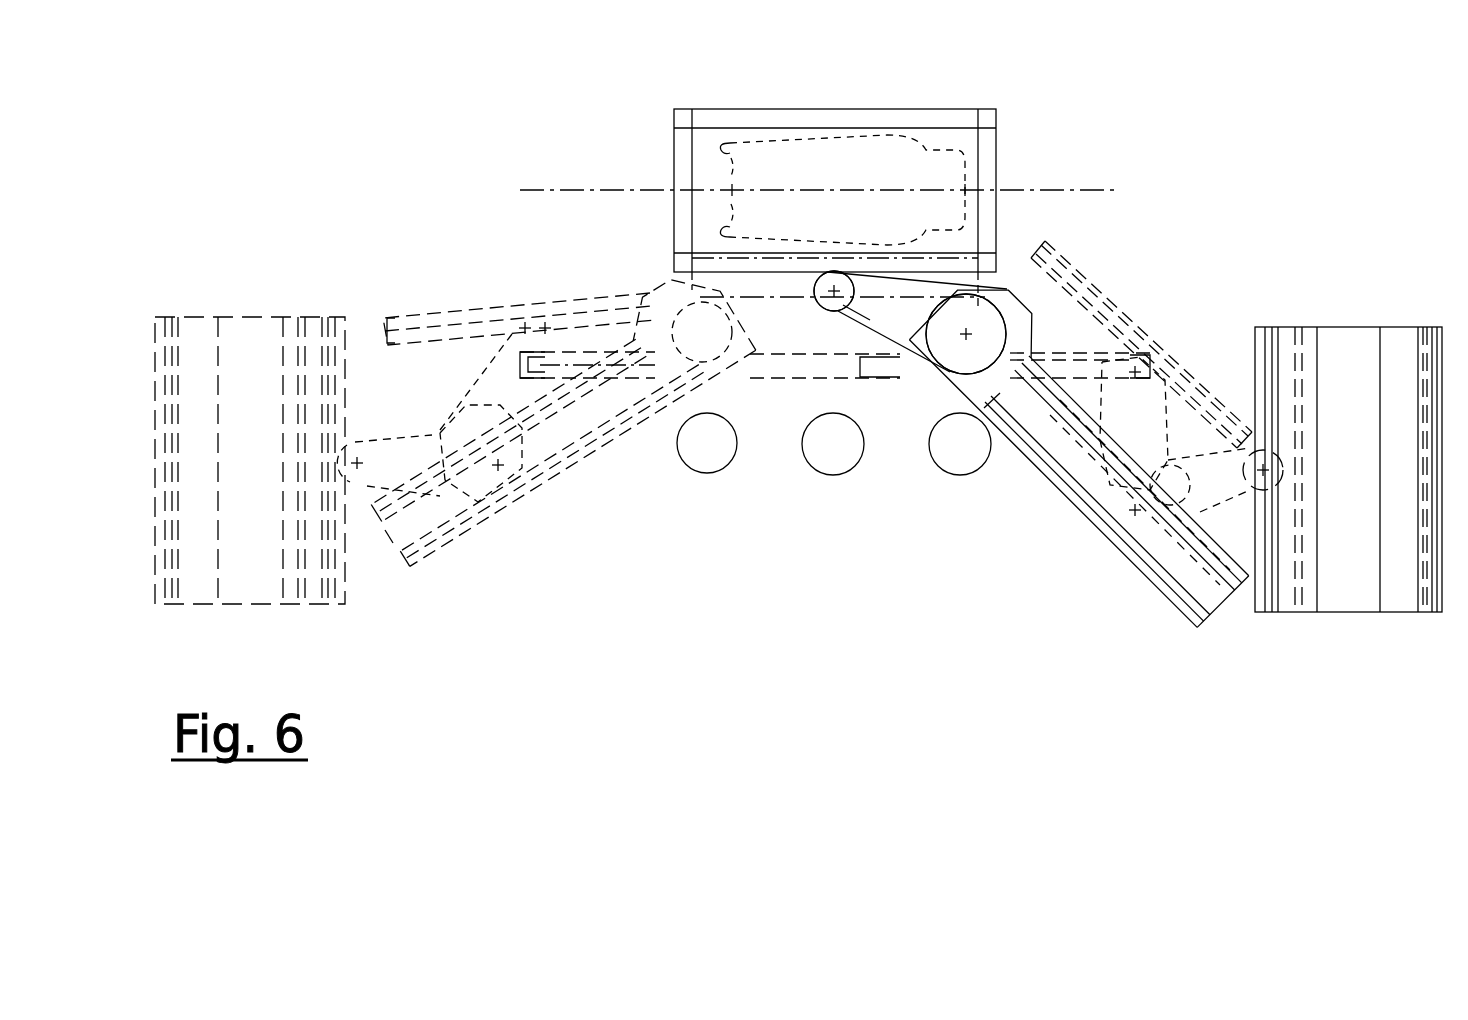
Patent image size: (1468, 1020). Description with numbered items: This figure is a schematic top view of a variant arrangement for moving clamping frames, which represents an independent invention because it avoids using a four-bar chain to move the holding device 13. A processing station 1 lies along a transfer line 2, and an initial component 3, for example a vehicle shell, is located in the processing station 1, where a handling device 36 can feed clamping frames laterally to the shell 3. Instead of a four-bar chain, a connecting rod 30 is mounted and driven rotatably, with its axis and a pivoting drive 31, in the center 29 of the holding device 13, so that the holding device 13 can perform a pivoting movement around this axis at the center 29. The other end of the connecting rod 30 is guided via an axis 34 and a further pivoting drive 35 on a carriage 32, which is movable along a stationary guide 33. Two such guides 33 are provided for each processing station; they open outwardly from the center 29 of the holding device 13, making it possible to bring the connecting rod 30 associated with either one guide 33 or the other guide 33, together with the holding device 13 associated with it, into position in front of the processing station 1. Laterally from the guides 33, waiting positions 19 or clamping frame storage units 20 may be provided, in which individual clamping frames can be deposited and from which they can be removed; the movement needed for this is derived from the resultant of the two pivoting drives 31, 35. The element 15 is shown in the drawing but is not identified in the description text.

The processing station 1 is at (592, 114).
The transfer line 2 is at (580, 186).
The initial component 3 is at (938, 152).
The holding device 13 is at (882, 275).
The housing frame 15 is at (995, 150).
The waiting position 19 is at (287, 296).
The clamping frame storage unit 20 is at (1339, 309).
The center of the holding device 29 is at (832, 300).
The connecting rod 30 is at (866, 314).
The pivoting drive 31 is at (840, 297).
The carriage 32 is at (1018, 320).
The stationary guide 33 is at (661, 412).
The axis 34 is at (964, 336).
The pivoting drive 35 is at (950, 356).
The handling device 36 is at (1197, 291).